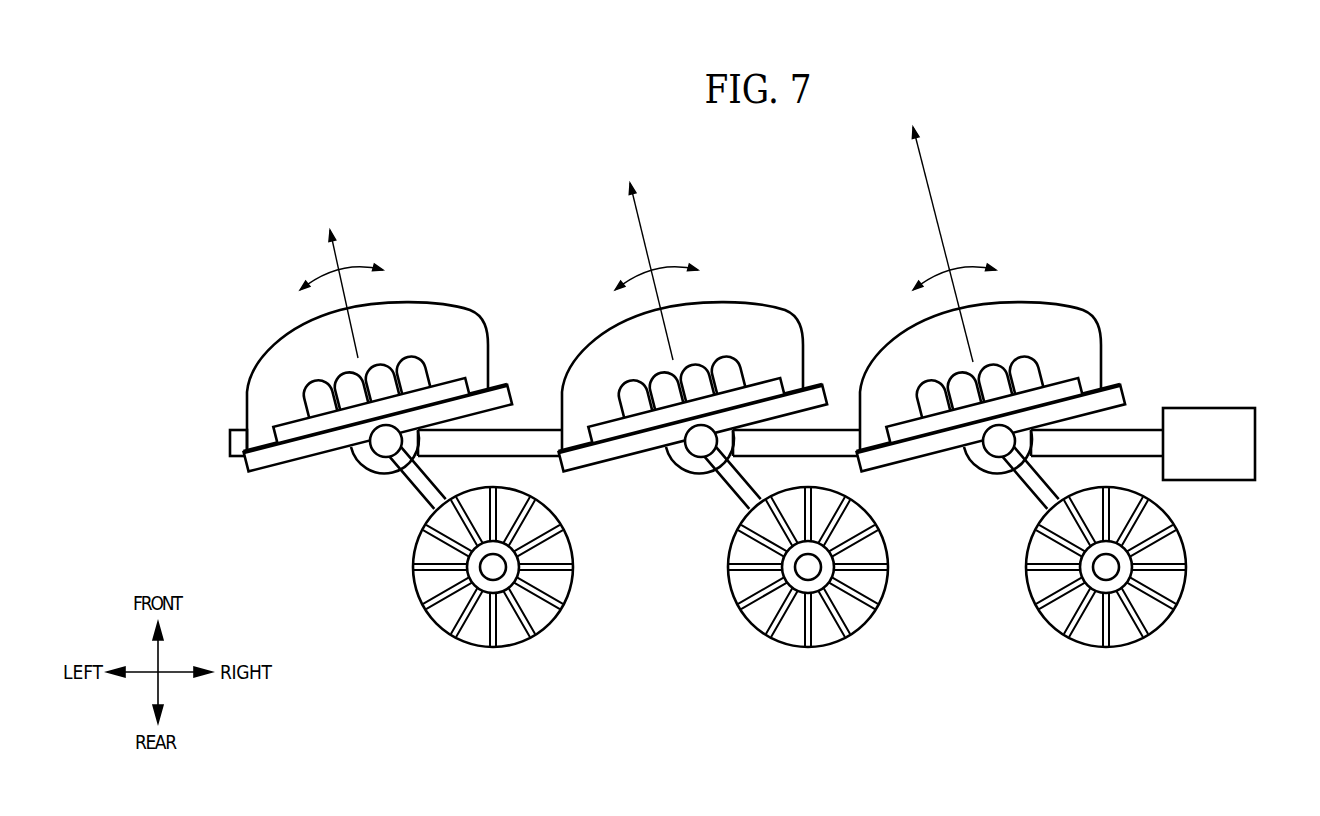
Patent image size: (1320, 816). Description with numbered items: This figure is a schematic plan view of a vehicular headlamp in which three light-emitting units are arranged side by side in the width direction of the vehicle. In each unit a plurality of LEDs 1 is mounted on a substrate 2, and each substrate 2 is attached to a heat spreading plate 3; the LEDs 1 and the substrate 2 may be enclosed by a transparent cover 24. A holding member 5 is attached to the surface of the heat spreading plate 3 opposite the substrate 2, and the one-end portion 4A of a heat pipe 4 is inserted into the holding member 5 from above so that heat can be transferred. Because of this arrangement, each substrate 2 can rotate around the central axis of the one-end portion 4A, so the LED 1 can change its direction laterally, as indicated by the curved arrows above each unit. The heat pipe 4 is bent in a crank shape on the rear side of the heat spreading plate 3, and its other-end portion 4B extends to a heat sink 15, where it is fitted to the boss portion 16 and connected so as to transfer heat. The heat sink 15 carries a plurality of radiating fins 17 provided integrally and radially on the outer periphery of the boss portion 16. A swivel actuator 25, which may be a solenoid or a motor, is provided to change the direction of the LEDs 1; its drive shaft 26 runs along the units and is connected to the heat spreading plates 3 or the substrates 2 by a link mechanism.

The LED 1 is at (345, 367).
The substrate 2 is at (290, 422).
The heat spreading plate 3 is at (268, 470).
The heat pipe 4 is at (413, 497).
The one-end portion of the heat pipe 4A is at (388, 437).
The other-end portion of the heat pipe 4B is at (492, 578).
The holding member 5 is at (355, 482).
The heat sink 15 is at (519, 658).
The boss portion 16 is at (467, 577).
The radiating fins 17 is at (548, 605).
The transparent cover 24 is at (418, 302).
The swivel actuator 25 is at (1256, 433).
The drive shaft 26 is at (840, 430).